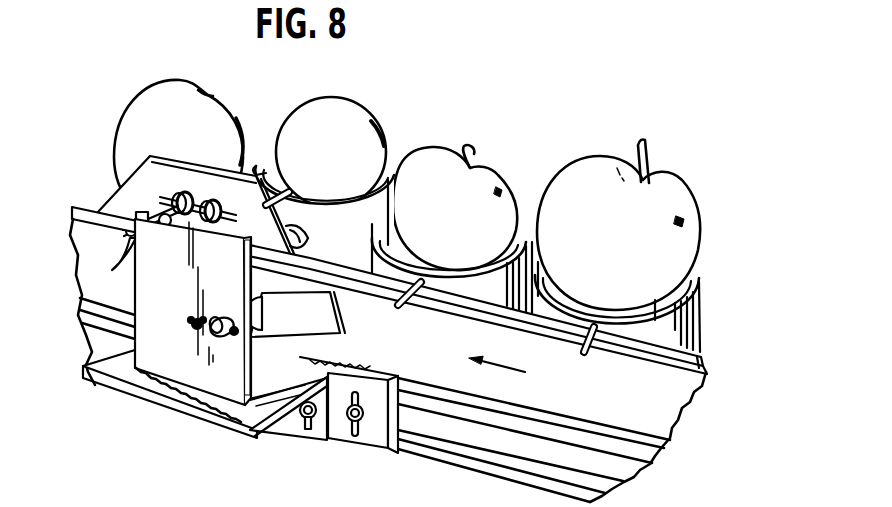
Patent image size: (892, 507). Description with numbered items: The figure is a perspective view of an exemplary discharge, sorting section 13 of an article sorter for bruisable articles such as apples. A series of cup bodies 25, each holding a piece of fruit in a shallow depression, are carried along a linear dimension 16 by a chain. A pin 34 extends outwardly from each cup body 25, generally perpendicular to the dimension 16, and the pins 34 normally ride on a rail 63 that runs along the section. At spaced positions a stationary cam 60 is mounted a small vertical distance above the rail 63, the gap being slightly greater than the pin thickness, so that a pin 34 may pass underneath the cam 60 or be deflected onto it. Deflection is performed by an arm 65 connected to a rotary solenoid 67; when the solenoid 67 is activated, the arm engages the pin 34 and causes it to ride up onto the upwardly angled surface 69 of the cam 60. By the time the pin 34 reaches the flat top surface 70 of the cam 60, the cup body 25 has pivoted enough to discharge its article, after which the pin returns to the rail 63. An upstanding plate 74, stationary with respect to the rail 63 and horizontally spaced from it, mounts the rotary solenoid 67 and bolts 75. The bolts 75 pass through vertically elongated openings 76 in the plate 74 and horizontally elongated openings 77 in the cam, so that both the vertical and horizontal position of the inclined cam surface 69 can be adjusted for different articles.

The discharge, sorting section 13 is at (468, 101).
The linear dimension 16 is at (507, 370).
The cup body 25 is at (262, 163).
The pin 34 is at (264, 205).
The stationary cam 60 is at (121, 197).
The rail 63 is at (707, 356).
The arm 65 is at (342, 332).
The rotary solenoid 67 is at (263, 314).
The upwardly angled surface 69 is at (247, 273).
The flat top surface 70 is at (217, 166).
The upstanding plate 74 is at (175, 354).
The bolts 75 is at (130, 252).
The vertically elongated openings 76 is at (140, 270).
The horizontally elongated openings 77 is at (163, 202).